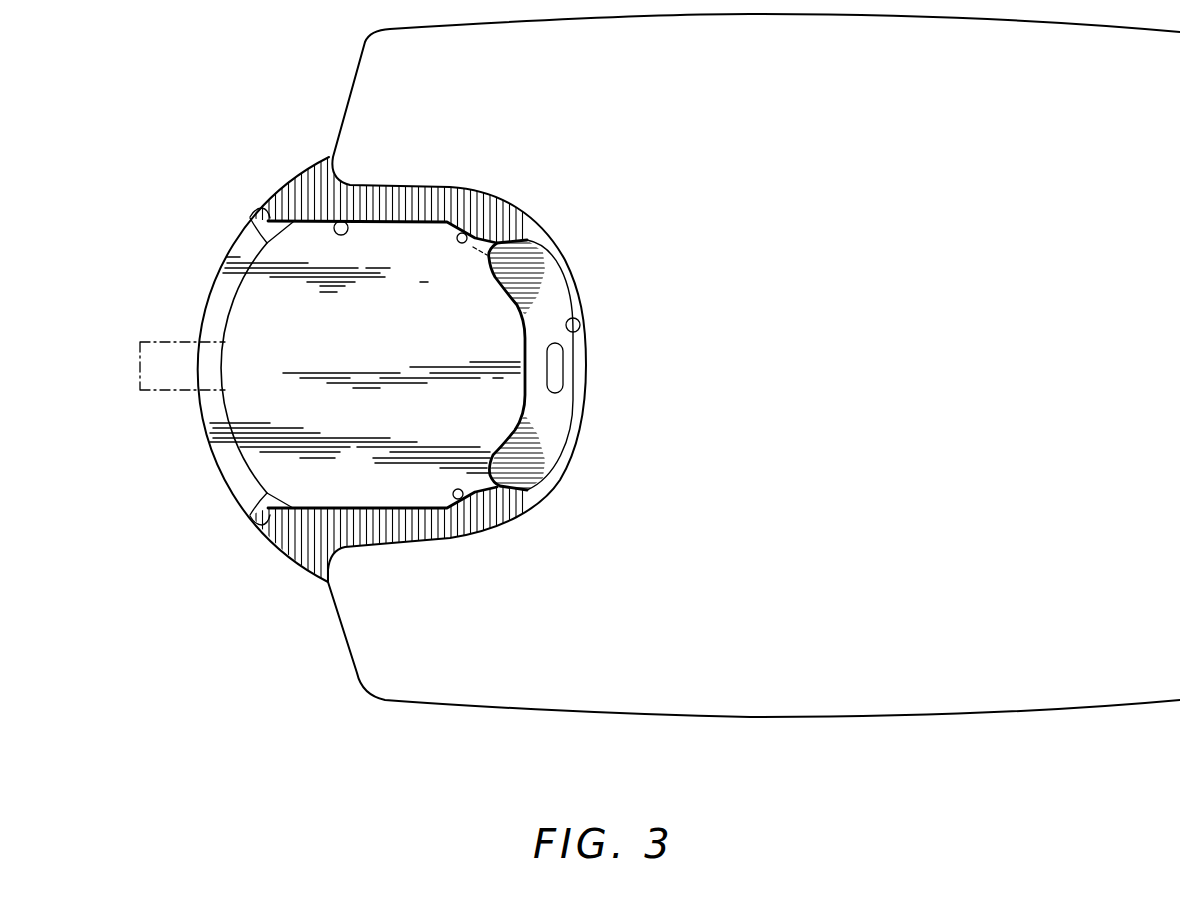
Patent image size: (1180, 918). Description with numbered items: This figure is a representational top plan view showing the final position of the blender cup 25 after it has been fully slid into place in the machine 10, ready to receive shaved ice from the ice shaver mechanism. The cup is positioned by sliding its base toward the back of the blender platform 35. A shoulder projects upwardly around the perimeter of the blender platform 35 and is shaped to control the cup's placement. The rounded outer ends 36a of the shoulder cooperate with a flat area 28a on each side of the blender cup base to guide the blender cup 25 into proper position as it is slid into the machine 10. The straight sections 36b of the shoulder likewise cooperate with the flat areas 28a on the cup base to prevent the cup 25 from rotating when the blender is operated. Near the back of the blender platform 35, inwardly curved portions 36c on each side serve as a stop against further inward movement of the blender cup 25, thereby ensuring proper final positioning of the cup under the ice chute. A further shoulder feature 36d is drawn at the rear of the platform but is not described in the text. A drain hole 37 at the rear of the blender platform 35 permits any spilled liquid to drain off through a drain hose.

The machine 10 is at (523, 710).
The blender cup 25 is at (245, 224).
The flat area 28a is at (380, 217).
The blender platform 35 is at (490, 313).
The rounded outer ends 36a is at (250, 217).
The straight sections 36b is at (357, 215).
The inwardly curved portions 36c is at (473, 233).
The aperture 36d is at (580, 333).
The drain hole 37 is at (557, 367).